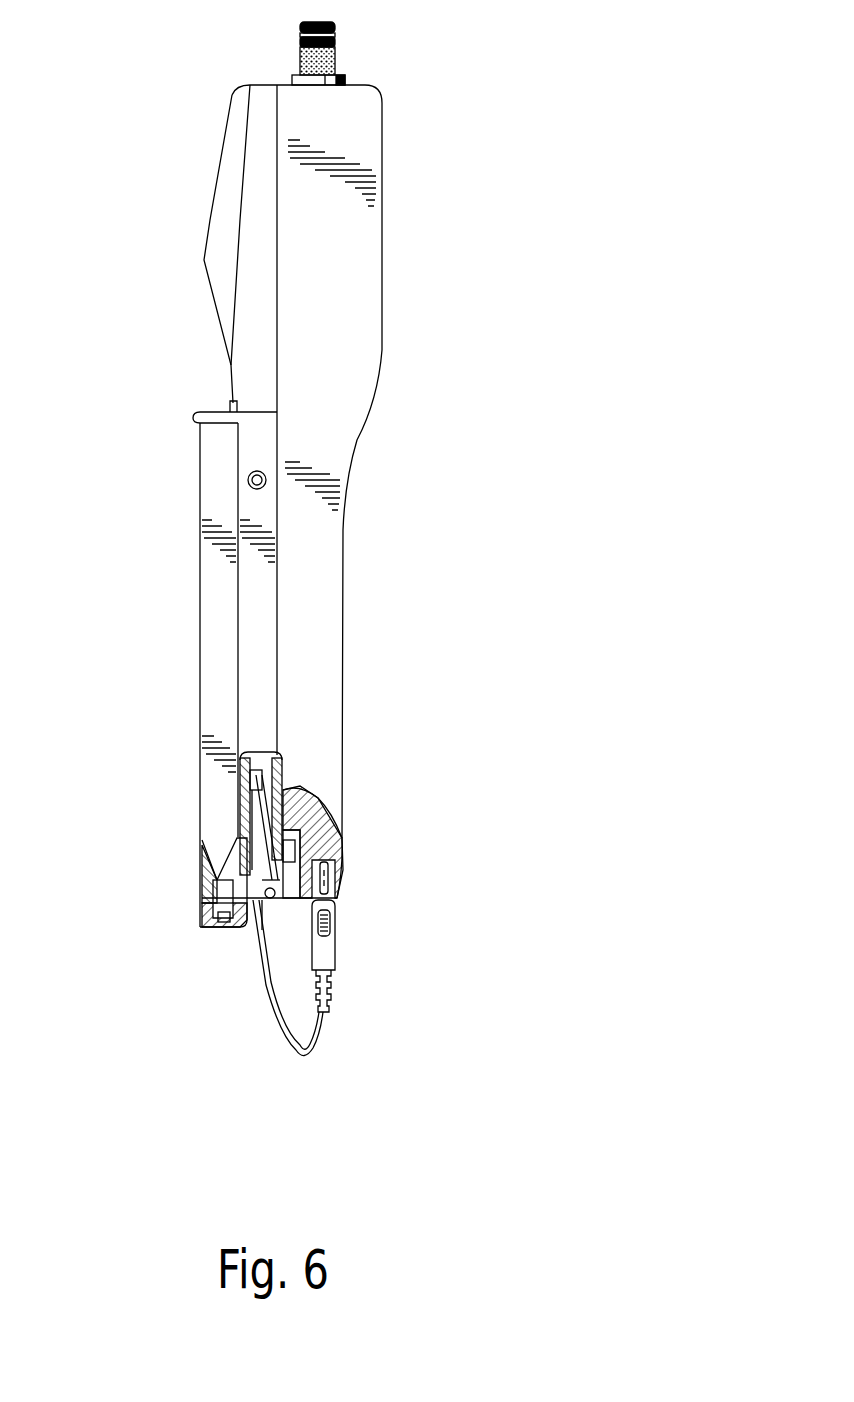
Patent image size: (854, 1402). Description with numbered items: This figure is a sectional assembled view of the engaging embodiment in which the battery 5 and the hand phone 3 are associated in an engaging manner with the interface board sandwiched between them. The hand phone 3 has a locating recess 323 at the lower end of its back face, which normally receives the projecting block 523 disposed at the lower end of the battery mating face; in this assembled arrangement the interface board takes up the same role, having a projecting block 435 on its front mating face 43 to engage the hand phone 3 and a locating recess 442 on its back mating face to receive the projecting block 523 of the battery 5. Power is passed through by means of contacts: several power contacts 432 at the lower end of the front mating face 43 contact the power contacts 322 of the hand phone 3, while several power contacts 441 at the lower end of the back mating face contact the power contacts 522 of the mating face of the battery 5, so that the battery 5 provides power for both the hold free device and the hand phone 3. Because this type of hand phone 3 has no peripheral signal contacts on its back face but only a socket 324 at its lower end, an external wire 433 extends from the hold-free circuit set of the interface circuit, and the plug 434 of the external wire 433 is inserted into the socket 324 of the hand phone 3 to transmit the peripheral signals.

The hand phone 3 is at (340, 302).
The battery 5 is at (215, 478).
The front mating face 43 is at (257, 702).
The external wire 433 is at (263, 474).
The power contacts 432 is at (288, 826).
The power contacts 441 is at (240, 857).
The power contacts 322 is at (327, 852).
The socket 324 is at (333, 880).
The plug 434 is at (333, 958).
The projecting block 435 is at (270, 903).
The power contacts 522 is at (233, 878).
The locating recess 442 is at (220, 928).
The projecting block 523 is at (235, 930).
The locating recess 323 is at (258, 960).